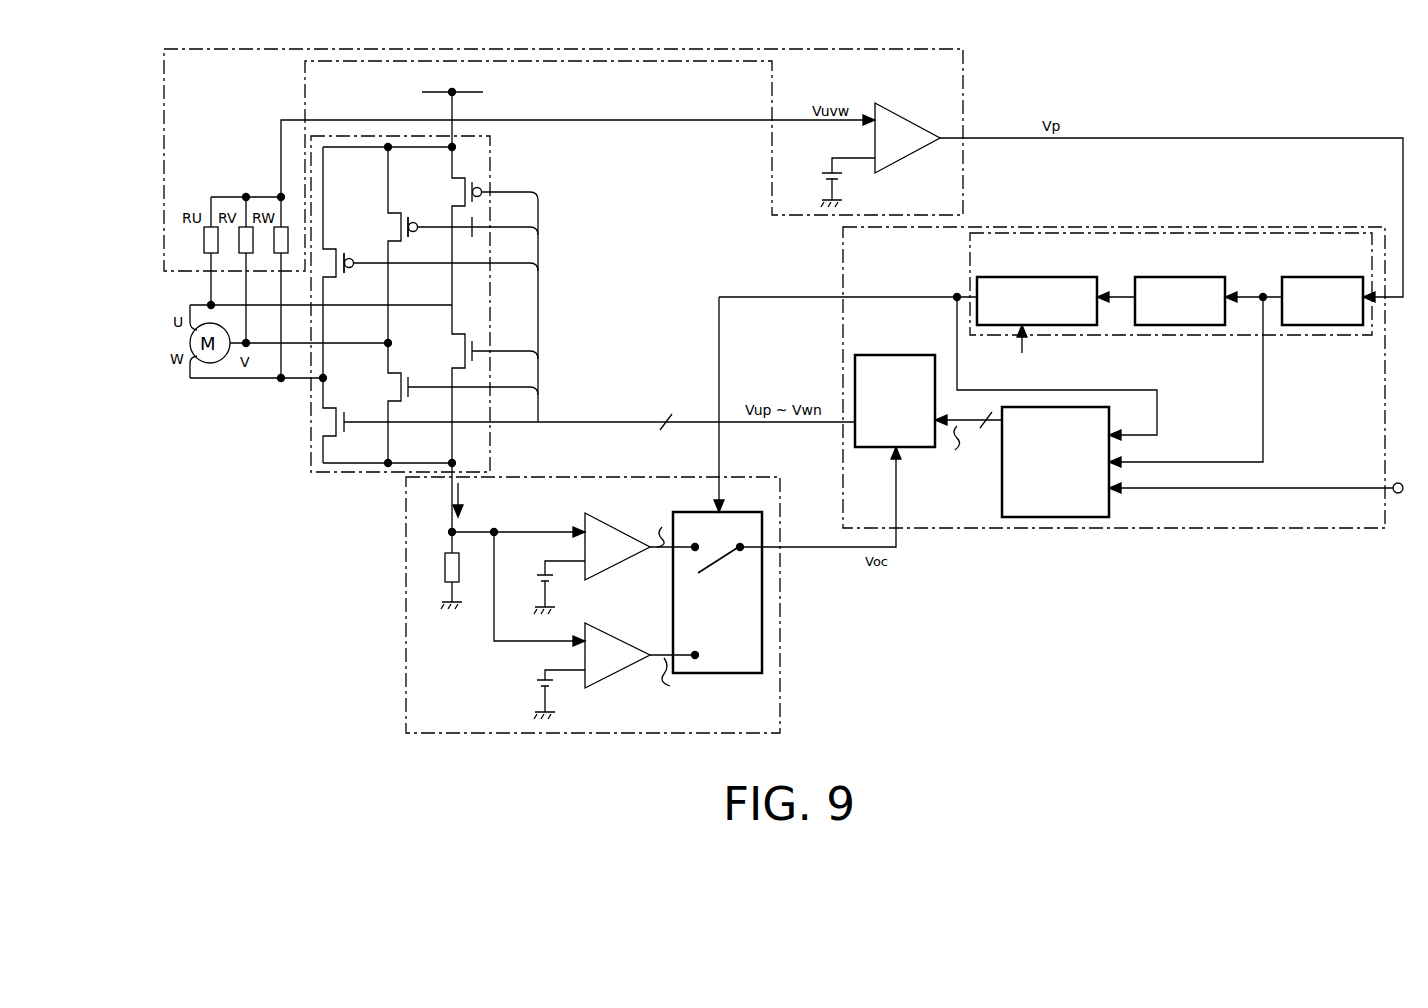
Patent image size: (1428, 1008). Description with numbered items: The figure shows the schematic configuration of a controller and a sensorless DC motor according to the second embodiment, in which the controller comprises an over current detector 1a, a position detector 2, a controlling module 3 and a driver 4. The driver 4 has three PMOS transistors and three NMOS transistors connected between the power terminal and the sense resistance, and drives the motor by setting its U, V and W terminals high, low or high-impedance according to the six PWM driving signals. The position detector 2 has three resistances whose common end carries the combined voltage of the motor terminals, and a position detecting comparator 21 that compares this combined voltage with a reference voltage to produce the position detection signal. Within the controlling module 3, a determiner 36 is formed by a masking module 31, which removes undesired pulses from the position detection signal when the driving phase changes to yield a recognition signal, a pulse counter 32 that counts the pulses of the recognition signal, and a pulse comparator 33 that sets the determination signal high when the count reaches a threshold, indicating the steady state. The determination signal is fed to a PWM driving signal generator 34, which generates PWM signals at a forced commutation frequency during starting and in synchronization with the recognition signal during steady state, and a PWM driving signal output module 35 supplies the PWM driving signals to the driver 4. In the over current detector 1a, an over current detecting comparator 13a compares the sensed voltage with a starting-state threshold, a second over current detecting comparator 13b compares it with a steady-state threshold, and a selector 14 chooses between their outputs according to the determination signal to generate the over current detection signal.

The over current detector 1a is at (780, 590).
The position detector 2 is at (963, 80).
The position detecting comparator 21 is at (902, 113).
The controlling module 3 is at (1300, 227).
The masking module 31 is at (1323, 277).
The pulse counter 32 is at (1180, 277).
The pulse comparator 33 is at (1022, 277).
The PWM driving signal generator 34 is at (1109, 505).
The PWM driving signal output module 35 is at (903, 355).
The determiner 36 is at (1322, 335).
The driver 4 is at (311, 440).
The over current detecting comparator 13a is at (612, 572).
The over current detecting comparator 13b is at (612, 680).
The selector 14 is at (762, 637).